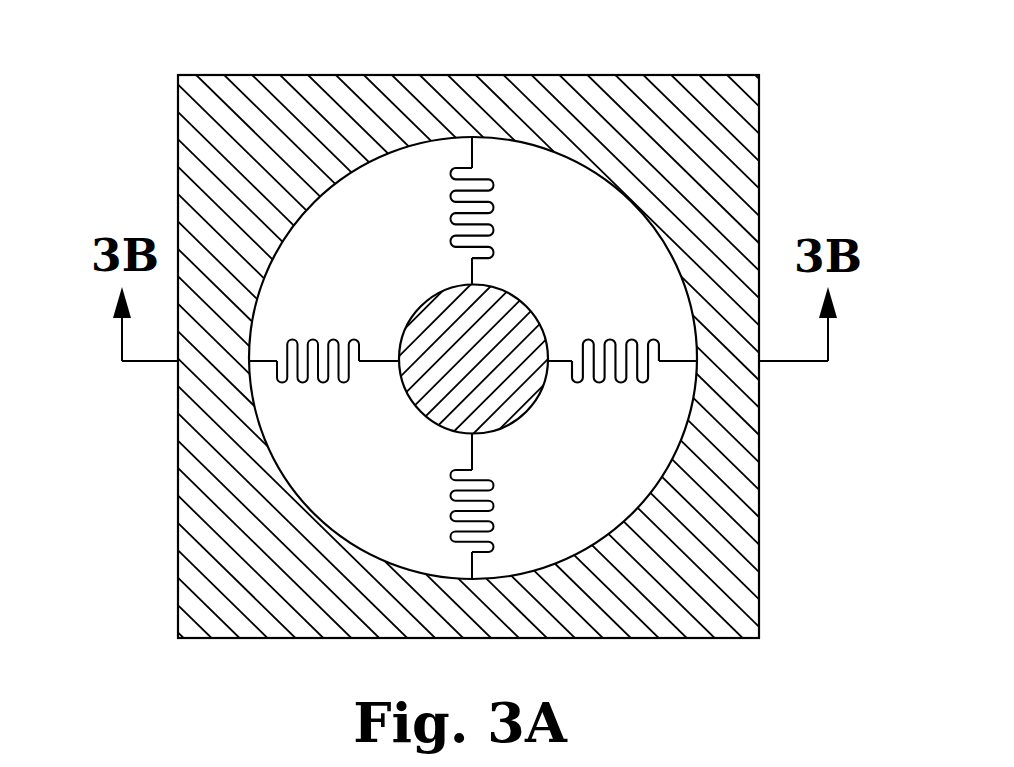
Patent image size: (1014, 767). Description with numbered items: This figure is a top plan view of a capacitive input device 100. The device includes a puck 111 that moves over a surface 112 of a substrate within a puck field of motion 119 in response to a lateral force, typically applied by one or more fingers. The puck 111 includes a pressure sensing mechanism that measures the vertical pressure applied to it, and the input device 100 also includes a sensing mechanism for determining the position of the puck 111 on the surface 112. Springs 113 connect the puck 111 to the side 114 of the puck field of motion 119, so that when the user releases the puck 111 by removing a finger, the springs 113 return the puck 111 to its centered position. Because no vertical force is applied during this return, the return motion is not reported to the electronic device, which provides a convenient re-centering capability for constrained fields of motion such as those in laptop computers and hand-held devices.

The capacitive input device 100 is at (128, 157).
The puck 111 is at (513, 317).
The surface 112 is at (595, 508).
The springs 113 is at (641, 383).
The side 114 is at (743, 520).
The puck field of motion 119 is at (610, 248).